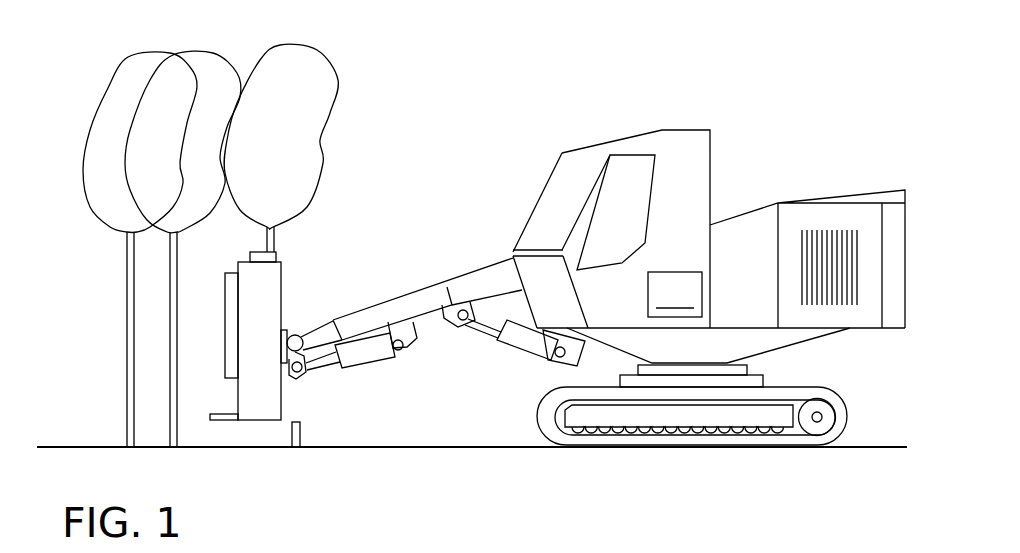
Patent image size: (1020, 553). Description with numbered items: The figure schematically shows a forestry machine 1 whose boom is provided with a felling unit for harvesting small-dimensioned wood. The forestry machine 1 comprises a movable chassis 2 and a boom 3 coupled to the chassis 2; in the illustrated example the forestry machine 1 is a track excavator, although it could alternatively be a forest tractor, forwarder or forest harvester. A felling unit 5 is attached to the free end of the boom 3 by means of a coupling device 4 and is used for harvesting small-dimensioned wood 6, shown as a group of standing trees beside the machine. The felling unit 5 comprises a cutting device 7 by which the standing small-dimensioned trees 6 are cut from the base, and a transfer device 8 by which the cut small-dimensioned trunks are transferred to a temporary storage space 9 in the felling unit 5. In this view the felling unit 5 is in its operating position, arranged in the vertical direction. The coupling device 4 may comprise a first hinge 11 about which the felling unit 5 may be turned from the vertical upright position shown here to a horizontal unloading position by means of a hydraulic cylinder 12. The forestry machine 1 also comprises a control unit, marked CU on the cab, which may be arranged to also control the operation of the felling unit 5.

The forestry machine 1 is at (803, 82).
The movable chassis 2 is at (897, 258).
The boom 3 is at (436, 332).
The coupling device 4 is at (302, 383).
The felling unit 5 is at (273, 350).
The small-dimensioned wood 6 is at (100, 265).
The cutting device 7 is at (223, 418).
The transfer device 8 is at (231, 326).
The temporary storage space 9 is at (265, 312).
The first hinge 11 is at (301, 358).
The hydraulic cylinder 12 is at (386, 352).